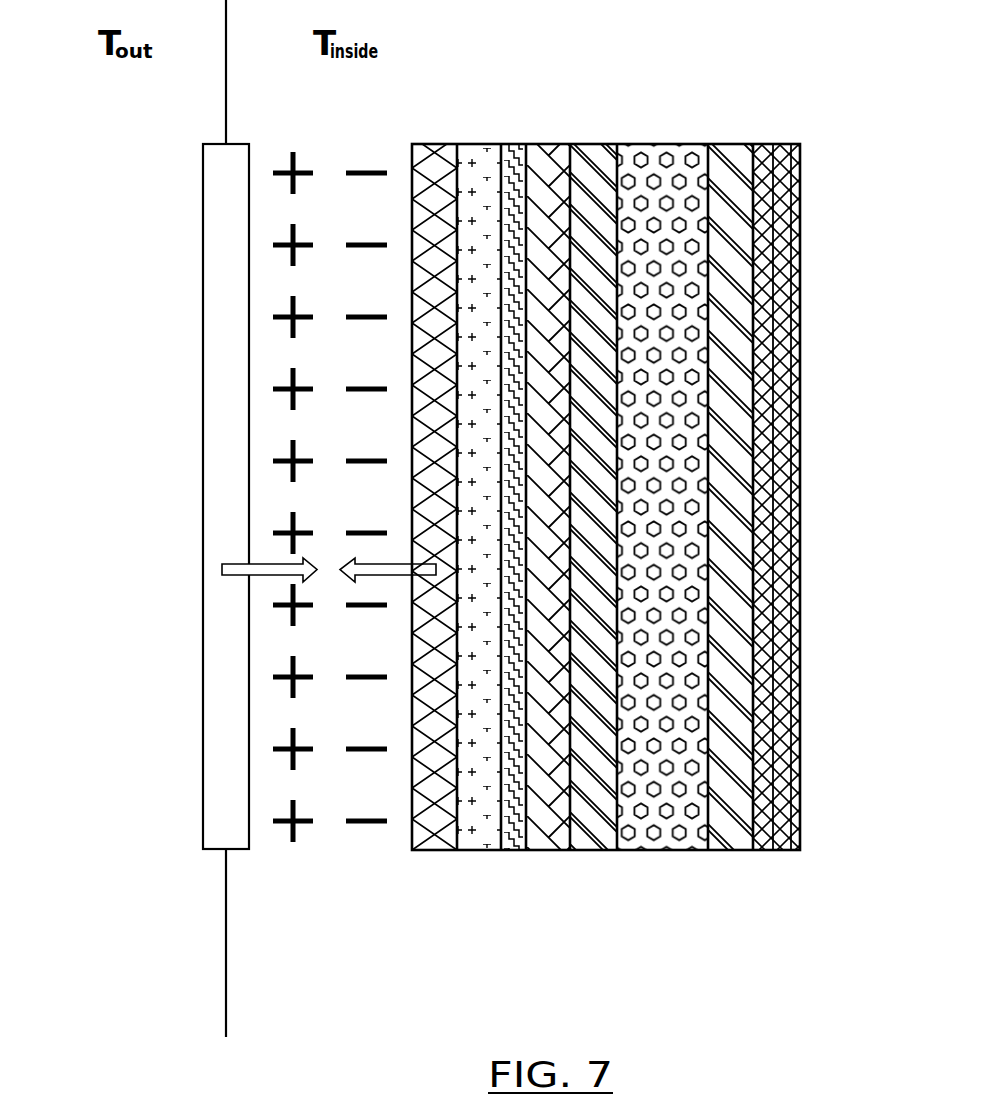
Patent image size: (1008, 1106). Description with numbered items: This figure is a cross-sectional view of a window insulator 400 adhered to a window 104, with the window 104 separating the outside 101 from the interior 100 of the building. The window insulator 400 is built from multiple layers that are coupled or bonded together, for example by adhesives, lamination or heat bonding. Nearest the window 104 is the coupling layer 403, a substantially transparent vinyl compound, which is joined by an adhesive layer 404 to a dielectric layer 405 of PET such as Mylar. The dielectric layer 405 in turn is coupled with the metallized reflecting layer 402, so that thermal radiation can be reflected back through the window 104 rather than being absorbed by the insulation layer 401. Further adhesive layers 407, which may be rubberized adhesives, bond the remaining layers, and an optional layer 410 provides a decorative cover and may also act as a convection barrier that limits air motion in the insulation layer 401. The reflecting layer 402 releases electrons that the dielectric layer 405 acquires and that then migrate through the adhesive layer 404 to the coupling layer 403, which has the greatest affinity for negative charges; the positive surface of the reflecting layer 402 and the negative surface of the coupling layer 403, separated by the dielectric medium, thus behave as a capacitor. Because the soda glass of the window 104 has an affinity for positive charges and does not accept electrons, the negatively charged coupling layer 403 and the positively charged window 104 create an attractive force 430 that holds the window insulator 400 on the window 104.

The interior 100 is at (484, 116).
The outside 101 is at (120, 197).
The window 104 is at (203, 387).
The window insulator 400 is at (611, 491).
The insulation layer 401 is at (665, 850).
The reflecting layer 402 is at (555, 850).
The coupling layer 403 is at (428, 850).
The adhesive layer 404 is at (475, 850).
The dielectric layer 405 is at (513, 850).
The adhesive layer 407 is at (593, 850).
The optional layer 410 is at (775, 850).
The attractive force 430 is at (265, 577).